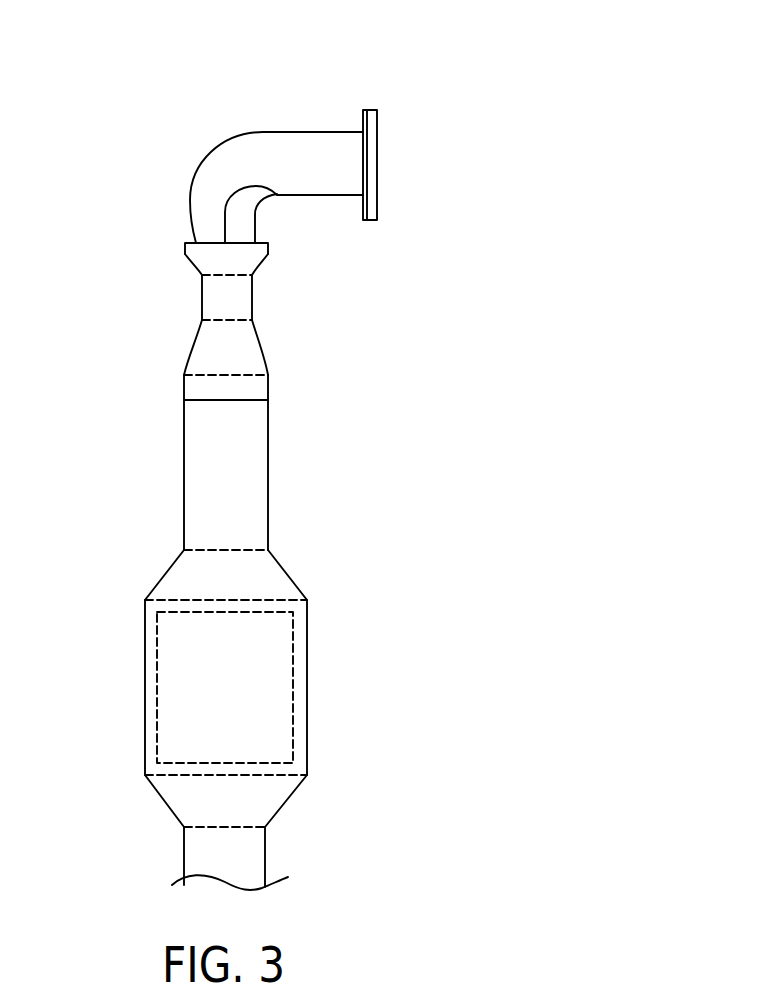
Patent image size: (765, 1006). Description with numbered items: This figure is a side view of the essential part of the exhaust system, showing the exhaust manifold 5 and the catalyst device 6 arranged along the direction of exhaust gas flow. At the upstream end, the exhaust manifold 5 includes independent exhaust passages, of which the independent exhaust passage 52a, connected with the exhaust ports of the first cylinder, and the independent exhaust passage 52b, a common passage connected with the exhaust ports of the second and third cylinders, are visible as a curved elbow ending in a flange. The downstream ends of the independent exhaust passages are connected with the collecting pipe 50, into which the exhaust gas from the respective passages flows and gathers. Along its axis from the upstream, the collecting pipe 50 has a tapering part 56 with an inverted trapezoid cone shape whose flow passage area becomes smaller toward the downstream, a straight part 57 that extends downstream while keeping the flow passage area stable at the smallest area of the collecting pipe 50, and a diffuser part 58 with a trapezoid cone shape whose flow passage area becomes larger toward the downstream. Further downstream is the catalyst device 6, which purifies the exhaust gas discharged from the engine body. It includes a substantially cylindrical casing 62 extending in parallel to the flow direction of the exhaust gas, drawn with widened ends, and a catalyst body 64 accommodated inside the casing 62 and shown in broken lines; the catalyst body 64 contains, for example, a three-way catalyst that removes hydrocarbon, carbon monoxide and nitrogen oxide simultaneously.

The exhaust manifold 5 is at (230, 135).
The independent exhaust passage 52a is at (318, 150).
The independent exhaust passage 52b is at (248, 215).
The collecting pipe 50 is at (223, 309).
The tapering part 56 is at (265, 253).
The straight part 57 is at (255, 296).
The diffuser part 58 is at (258, 347).
The catalyst device 6 is at (199, 688).
The casing 62 is at (302, 630).
The catalyst body 64 is at (180, 693).